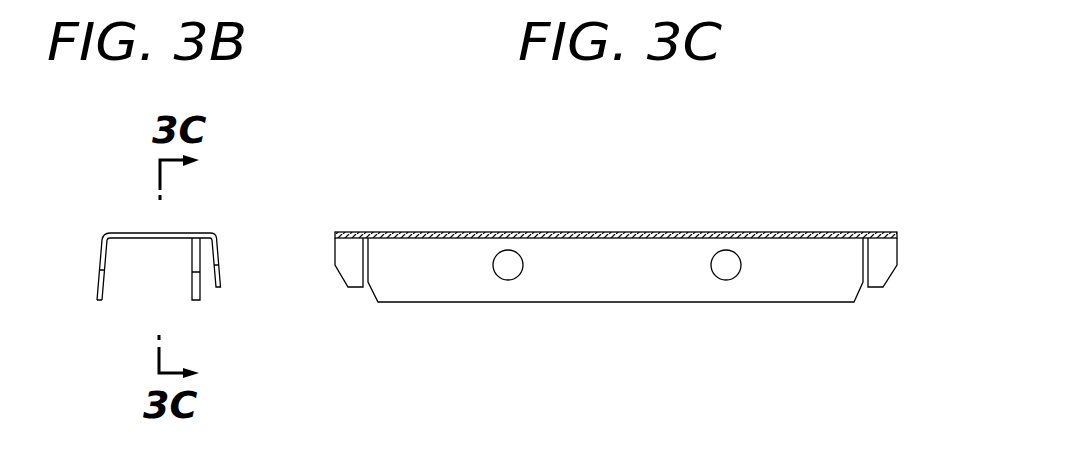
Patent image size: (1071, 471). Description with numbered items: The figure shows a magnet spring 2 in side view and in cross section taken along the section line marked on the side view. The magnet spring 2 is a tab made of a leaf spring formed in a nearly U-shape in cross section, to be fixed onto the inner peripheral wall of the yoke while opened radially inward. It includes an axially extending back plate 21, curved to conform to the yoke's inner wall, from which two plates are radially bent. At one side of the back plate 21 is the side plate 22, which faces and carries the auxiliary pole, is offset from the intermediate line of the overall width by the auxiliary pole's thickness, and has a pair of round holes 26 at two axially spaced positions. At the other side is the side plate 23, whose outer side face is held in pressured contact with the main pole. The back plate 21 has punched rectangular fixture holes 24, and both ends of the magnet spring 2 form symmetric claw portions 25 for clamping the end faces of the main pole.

In FIG. 3B, the magnet spring 2 is at (164, 250).
In FIG. 3C, the magnet spring 2 is at (627, 264).
In FIG. 3B, the back plate 21 is at (172, 238).
In FIG. 3C, the back plate 21 is at (747, 231).
In FIG. 3B, the side plate 22 is at (200, 252).
In FIG. 3C, the side plate 22 is at (670, 280).
In FIG. 3B, the side plate 23 is at (98, 257).
In FIG. 3C, the fixture hole 24 is at (431, 232).
In FIG. 3B, the claw portion 25 is at (102, 280).
In FIG. 3C, the claw portion 25 is at (350, 270).
In FIG. 3C, the round hole 26 is at (508, 272).